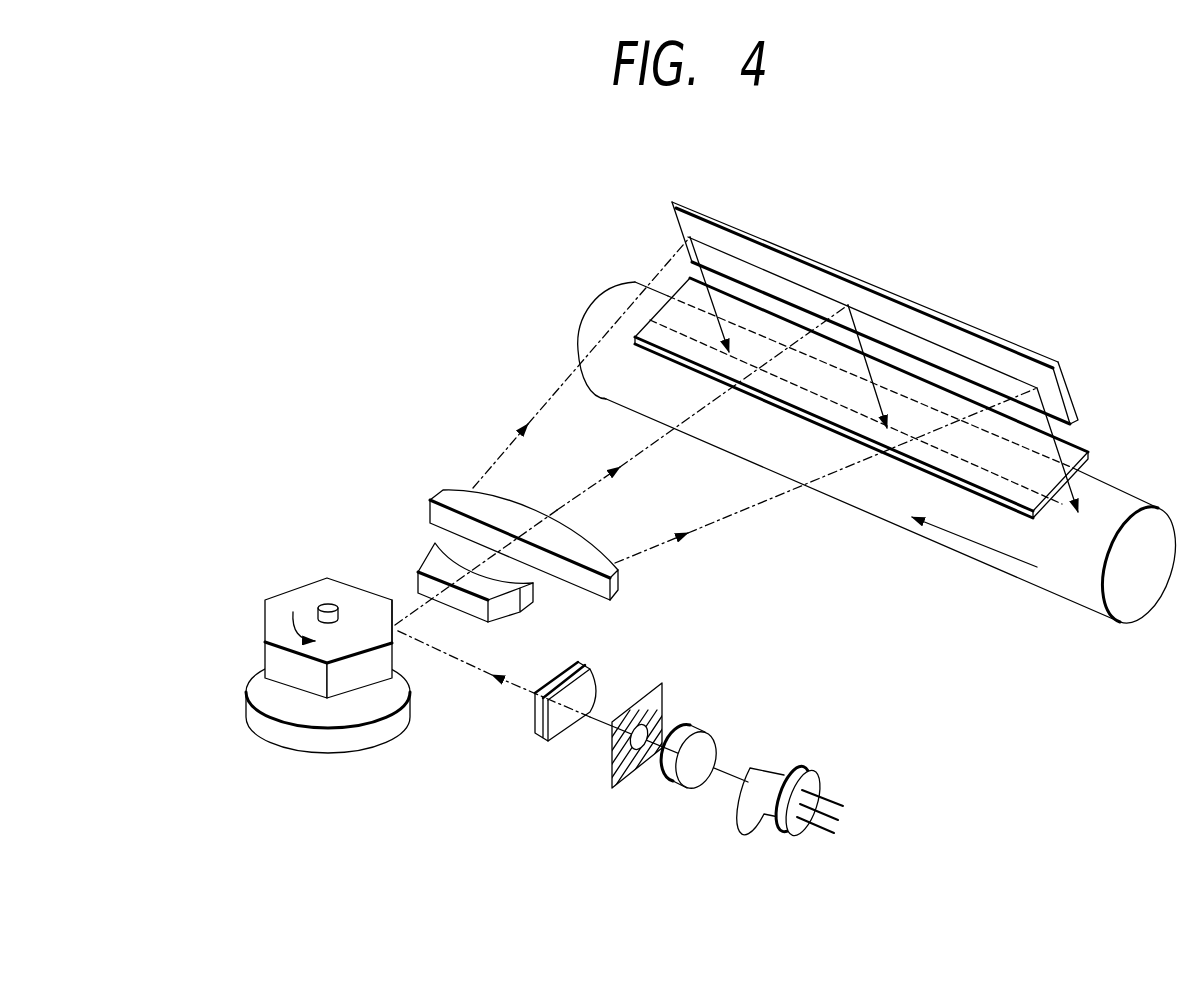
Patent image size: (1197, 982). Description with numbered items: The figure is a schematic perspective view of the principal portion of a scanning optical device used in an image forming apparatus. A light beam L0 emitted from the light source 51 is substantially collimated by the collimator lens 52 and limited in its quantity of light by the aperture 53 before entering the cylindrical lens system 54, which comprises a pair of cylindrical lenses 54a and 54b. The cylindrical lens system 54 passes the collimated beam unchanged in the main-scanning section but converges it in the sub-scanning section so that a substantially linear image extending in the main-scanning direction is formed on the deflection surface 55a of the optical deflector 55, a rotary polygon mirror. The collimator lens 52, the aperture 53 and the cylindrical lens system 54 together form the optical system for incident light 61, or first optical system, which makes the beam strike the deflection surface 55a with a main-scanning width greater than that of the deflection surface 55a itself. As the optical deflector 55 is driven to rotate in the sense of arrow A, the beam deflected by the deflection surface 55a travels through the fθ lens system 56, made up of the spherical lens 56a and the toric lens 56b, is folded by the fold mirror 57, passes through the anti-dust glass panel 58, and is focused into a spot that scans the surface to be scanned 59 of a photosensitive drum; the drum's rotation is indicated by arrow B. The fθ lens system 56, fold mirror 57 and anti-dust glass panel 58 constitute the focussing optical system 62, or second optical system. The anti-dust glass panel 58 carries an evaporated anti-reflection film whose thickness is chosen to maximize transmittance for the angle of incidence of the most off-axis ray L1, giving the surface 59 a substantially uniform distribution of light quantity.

The light source 51 is at (791, 834).
The collimator lens 52 is at (673, 773).
The aperture 53 is at (667, 699).
The cylindrical lens system 54 is at (547, 820).
The cylindrical lens 54a is at (547, 744).
The cylindrical lens 54b is at (533, 735).
The optical deflector 55 is at (288, 670).
The deflection surface 55a is at (391, 614).
The fθ lens system 56 is at (412, 396).
The spherical lens 56a is at (431, 558).
The toric lens 56b is at (453, 498).
The fold mirror 57 is at (912, 320).
The anti-dust glass panel 58 is at (1083, 440).
The surface to be scanned 59 is at (1127, 502).
The optical system for incident light 61 is at (643, 622).
The focussing optical system 62 is at (608, 135).
The light beam L0 is at (730, 765).
The most off-axis ray L1 is at (657, 278).
The arrow A is at (266, 607).
The rotation direction of drum B is at (975, 547).